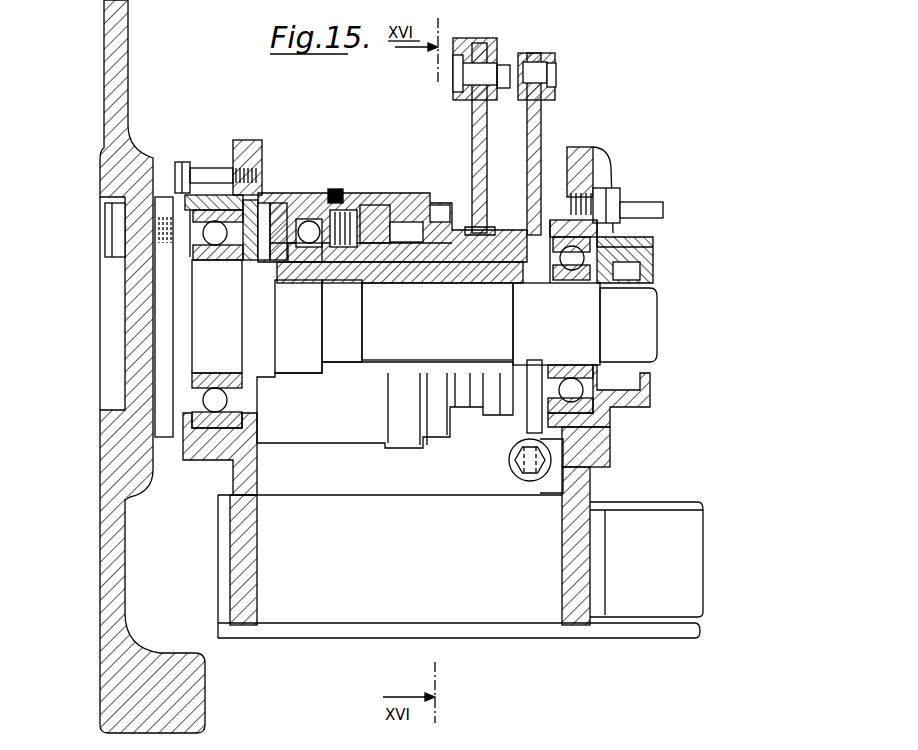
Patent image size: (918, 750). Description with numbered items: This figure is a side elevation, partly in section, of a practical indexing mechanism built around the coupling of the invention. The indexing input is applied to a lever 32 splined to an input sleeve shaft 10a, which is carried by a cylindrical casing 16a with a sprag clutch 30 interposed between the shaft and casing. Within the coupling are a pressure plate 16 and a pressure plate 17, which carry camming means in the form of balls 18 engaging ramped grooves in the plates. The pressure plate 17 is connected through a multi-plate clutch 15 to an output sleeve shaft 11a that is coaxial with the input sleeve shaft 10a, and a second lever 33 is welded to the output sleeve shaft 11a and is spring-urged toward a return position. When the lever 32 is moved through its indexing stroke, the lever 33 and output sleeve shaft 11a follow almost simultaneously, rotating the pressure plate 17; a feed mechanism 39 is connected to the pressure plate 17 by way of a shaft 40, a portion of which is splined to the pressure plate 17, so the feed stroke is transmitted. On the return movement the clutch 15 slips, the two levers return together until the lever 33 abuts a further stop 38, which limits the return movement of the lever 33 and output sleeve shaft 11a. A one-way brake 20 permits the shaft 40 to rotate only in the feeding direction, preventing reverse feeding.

The feed mechanism 39 is at (192, 688).
The shaft 40 is at (302, 357).
The multi-plate clutch 15 is at (341, 250).
The pressure plate 16 is at (302, 262).
The cylindrical casing 16a is at (372, 200).
The pressure plate 17 is at (332, 225).
The balls 18 is at (303, 225).
The sprag clutch 30 is at (400, 190).
The input sleeve shaft 10a is at (440, 230).
The output sleeve shaft 11a is at (413, 270).
The lever 32 is at (483, 135).
The second lever 33 is at (533, 133).
The one-way brake 20 is at (625, 268).
The stop 38 is at (520, 484).